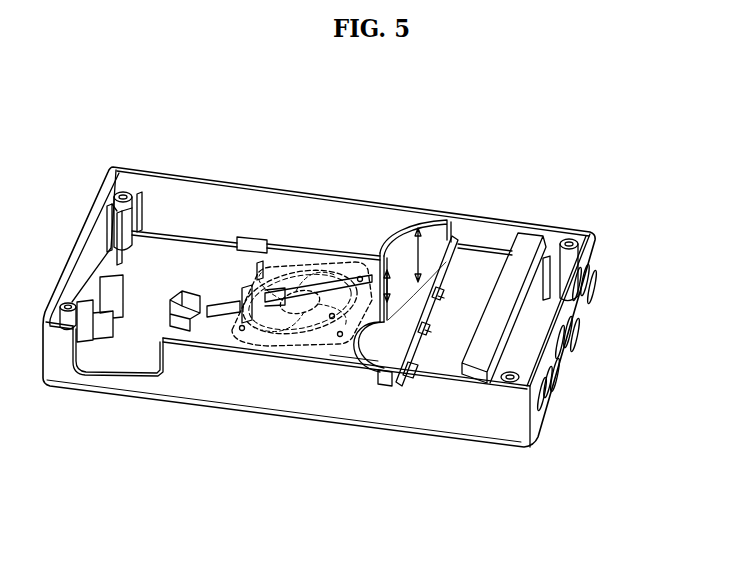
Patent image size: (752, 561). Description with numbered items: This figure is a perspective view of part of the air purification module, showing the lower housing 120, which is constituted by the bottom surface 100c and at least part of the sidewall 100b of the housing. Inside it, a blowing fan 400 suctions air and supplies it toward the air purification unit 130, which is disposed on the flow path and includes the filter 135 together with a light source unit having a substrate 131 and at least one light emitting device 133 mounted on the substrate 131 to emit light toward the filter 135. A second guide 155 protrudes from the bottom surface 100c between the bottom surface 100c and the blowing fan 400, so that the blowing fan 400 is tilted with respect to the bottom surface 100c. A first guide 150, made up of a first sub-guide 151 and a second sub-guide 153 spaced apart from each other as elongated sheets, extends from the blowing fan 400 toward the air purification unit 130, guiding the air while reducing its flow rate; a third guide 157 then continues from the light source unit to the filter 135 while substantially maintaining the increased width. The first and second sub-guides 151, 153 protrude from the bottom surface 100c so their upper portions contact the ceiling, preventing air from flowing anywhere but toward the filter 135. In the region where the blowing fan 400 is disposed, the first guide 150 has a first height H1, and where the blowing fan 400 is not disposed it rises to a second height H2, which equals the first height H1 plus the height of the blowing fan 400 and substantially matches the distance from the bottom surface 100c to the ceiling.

The sidewall 100b is at (212, 377).
The bottom surface 100c is at (183, 257).
The lower housing 120 is at (78, 236).
The air purification unit 130 is at (581, 337).
The substrate 131 is at (457, 278).
The light emitting device 133 is at (440, 296).
The filter 135 is at (507, 343).
The first guide 150 is at (401, 384).
The first sub-guide 151 is at (362, 357).
The second sub-guide 153 is at (403, 335).
The second guide 155 is at (330, 352).
The third guide 157 is at (477, 262).
The blowing fan 400 is at (307, 252).
The first height H1 is at (415, 292).
The second height H2 is at (427, 255).